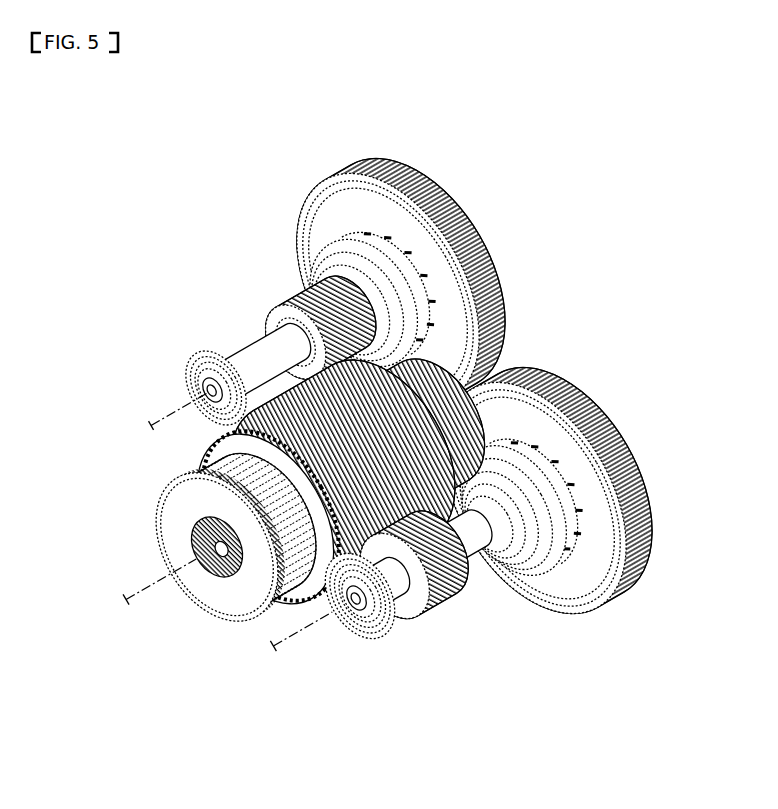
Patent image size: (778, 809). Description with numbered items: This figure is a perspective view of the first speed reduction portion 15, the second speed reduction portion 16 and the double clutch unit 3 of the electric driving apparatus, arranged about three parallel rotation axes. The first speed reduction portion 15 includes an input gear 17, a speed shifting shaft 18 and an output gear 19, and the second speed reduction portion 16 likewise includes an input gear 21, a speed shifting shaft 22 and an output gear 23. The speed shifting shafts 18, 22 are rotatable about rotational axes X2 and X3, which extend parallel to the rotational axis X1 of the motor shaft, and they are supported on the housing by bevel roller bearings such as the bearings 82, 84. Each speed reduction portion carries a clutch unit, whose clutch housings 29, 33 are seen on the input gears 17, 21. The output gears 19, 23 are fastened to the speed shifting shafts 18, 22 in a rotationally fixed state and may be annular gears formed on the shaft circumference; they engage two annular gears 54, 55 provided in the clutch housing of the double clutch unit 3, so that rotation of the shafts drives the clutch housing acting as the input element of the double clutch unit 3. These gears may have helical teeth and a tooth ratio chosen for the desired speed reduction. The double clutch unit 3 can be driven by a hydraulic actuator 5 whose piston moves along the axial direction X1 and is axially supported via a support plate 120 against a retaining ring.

The double clutch unit 3 is at (209, 530).
The actuator 5 is at (209, 570).
The first speed reduction portion 15 is at (378, 263).
The second speed reduction portion 16 is at (549, 522).
The input gear 17 is at (425, 190).
The speed shifting shaft 18 is at (257, 347).
The output gear 19 is at (297, 300).
The input gear 21 is at (603, 430).
The speed shifting shaft 22 is at (467, 550).
The output gear 23 is at (436, 608).
The clutch housing 29 is at (345, 237).
The clutch housing 33 is at (557, 563).
The annular gear 54 is at (410, 433).
The annular gear 55 is at (360, 488).
The bevel roller bearing 82 is at (213, 343).
The bevel roller bearing 84 is at (400, 632).
The support plate 120 is at (180, 513).
The rotational axis X1 is at (127, 593).
The rotational axis X2 is at (160, 420).
The rotational axis X3 is at (277, 647).